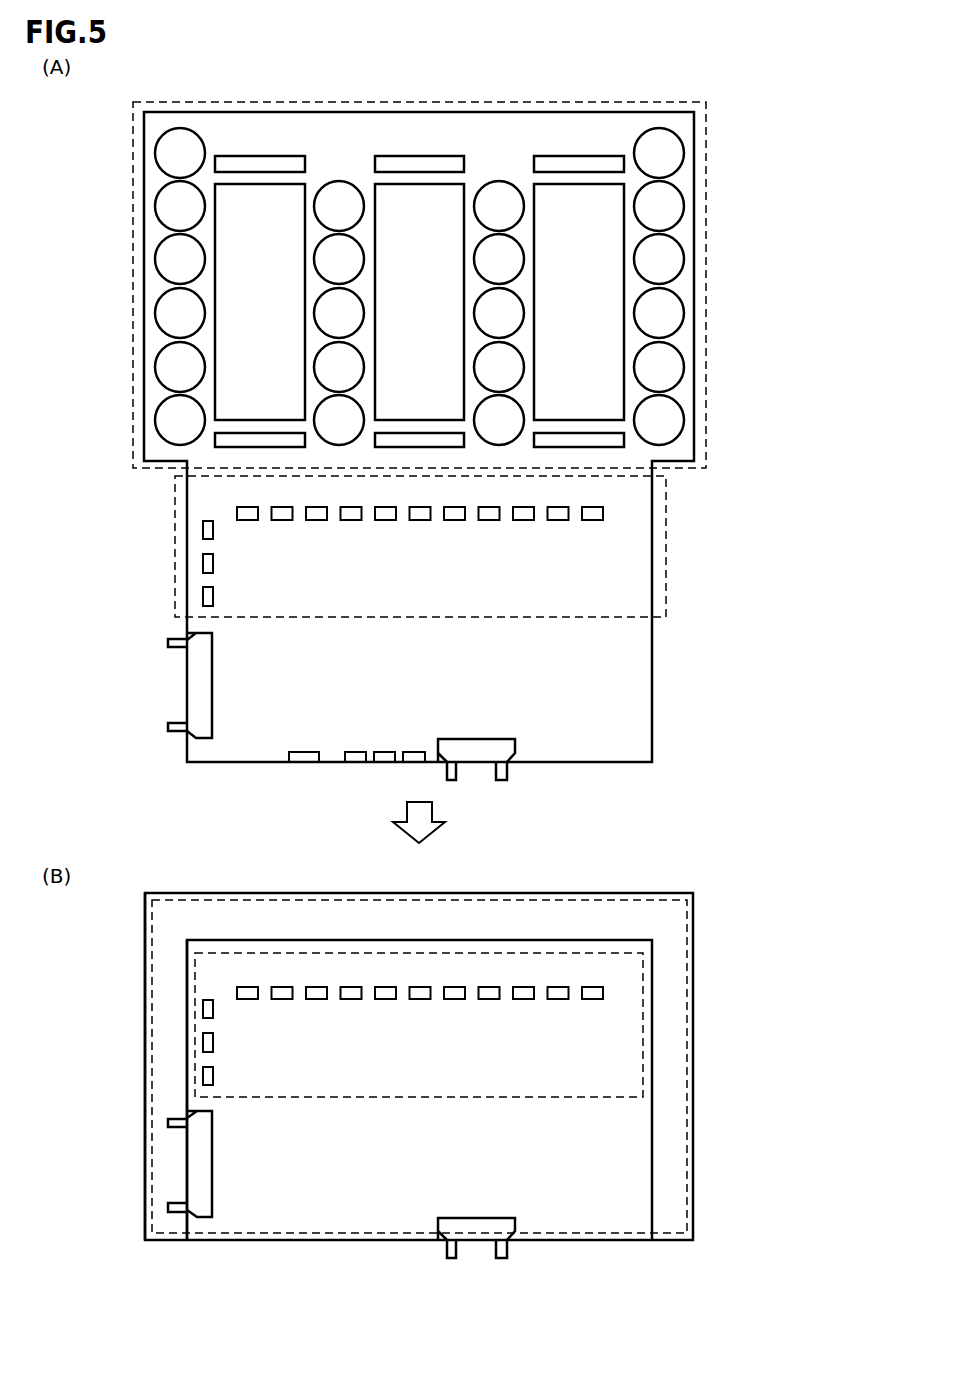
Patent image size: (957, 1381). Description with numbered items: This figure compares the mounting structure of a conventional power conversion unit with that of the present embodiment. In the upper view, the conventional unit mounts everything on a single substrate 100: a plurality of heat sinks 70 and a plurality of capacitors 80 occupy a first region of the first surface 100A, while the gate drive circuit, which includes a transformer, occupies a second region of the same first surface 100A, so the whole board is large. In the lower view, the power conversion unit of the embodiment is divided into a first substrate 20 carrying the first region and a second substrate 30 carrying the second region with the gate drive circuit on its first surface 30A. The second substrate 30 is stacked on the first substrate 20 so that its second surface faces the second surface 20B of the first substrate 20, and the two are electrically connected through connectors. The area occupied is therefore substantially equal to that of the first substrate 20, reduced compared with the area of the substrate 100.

The first substrate 20 is at (695, 962).
The second surface 20B is at (163, 1110).
The second substrate 30 is at (654, 1018).
The first surface 30A is at (192, 975).
The heat sink 70 is at (256, 184).
The capacitor 80 is at (155, 367).
The substrate 100 is at (654, 686).
The first surface 100A is at (683, 123).